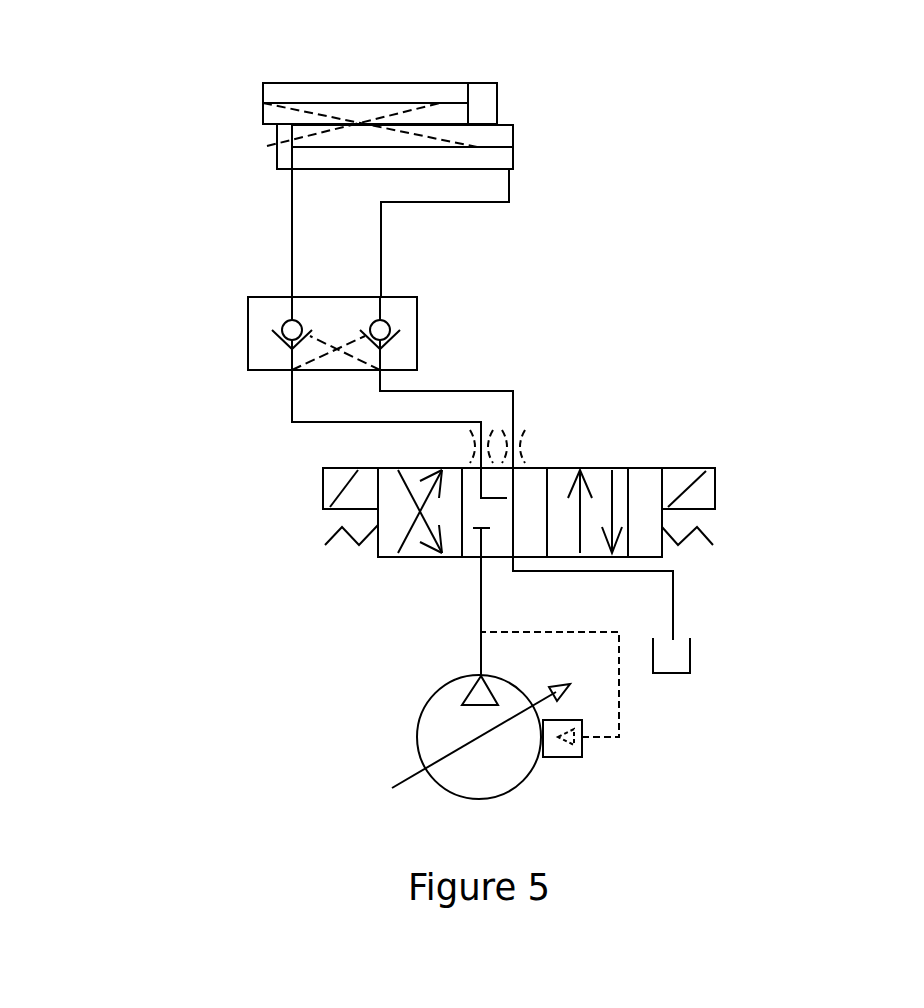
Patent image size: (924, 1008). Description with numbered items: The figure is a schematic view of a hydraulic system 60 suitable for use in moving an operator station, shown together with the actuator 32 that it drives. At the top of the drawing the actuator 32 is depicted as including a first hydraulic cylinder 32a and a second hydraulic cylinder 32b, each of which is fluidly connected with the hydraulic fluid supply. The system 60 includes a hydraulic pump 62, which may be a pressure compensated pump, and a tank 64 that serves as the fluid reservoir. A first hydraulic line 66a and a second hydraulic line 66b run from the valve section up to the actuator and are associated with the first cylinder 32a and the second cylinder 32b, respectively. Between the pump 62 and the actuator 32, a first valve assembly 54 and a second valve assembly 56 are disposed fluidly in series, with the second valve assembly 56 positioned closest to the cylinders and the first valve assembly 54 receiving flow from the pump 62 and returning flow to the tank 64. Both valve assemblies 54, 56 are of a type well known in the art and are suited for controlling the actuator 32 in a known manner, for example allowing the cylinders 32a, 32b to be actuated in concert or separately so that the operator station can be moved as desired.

The actuator 32 is at (240, 145).
The first hydraulic cylinder 32a is at (497, 103).
The second hydraulic cylinder 32b is at (513, 162).
The first hydraulic line 66a is at (292, 222).
The second hydraulic line 66b is at (381, 222).
The second valve assembly 56 is at (417, 322).
The first valve assembly 54 is at (722, 492).
The hydraulic system 60 is at (705, 597).
The hydraulic pump 62 is at (530, 777).
The tank 64 is at (667, 673).